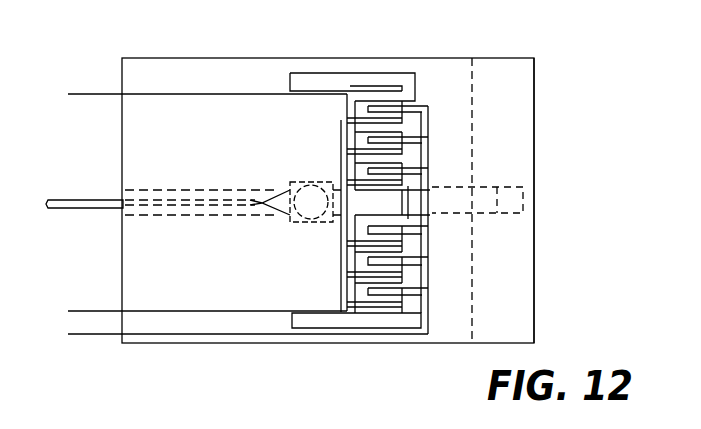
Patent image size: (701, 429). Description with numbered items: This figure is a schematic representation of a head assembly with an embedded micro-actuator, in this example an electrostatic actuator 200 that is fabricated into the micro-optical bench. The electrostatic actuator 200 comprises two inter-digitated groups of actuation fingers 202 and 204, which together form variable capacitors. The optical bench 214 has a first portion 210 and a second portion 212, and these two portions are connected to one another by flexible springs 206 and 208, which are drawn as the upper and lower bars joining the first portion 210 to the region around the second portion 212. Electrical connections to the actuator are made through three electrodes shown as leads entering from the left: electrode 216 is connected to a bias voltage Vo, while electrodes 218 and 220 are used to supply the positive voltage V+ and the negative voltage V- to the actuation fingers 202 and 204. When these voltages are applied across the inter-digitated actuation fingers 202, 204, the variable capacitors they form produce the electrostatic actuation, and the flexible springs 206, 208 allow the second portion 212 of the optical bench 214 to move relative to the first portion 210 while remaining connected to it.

The electrostatic actuator 200 is at (320, 158).
The actuation fingers 202 is at (433, 94).
The actuation fingers 204 is at (435, 283).
The flexible spring 206 is at (364, 68).
The flexible spring 208 is at (350, 340).
The first portion 210 is at (130, 158).
The second portion 212 is at (517, 147).
The optical bench 214 is at (547, 105).
The electrode 216 is at (95, 338).
The electrode 218 is at (89, 93).
The electrode 220 is at (86, 310).